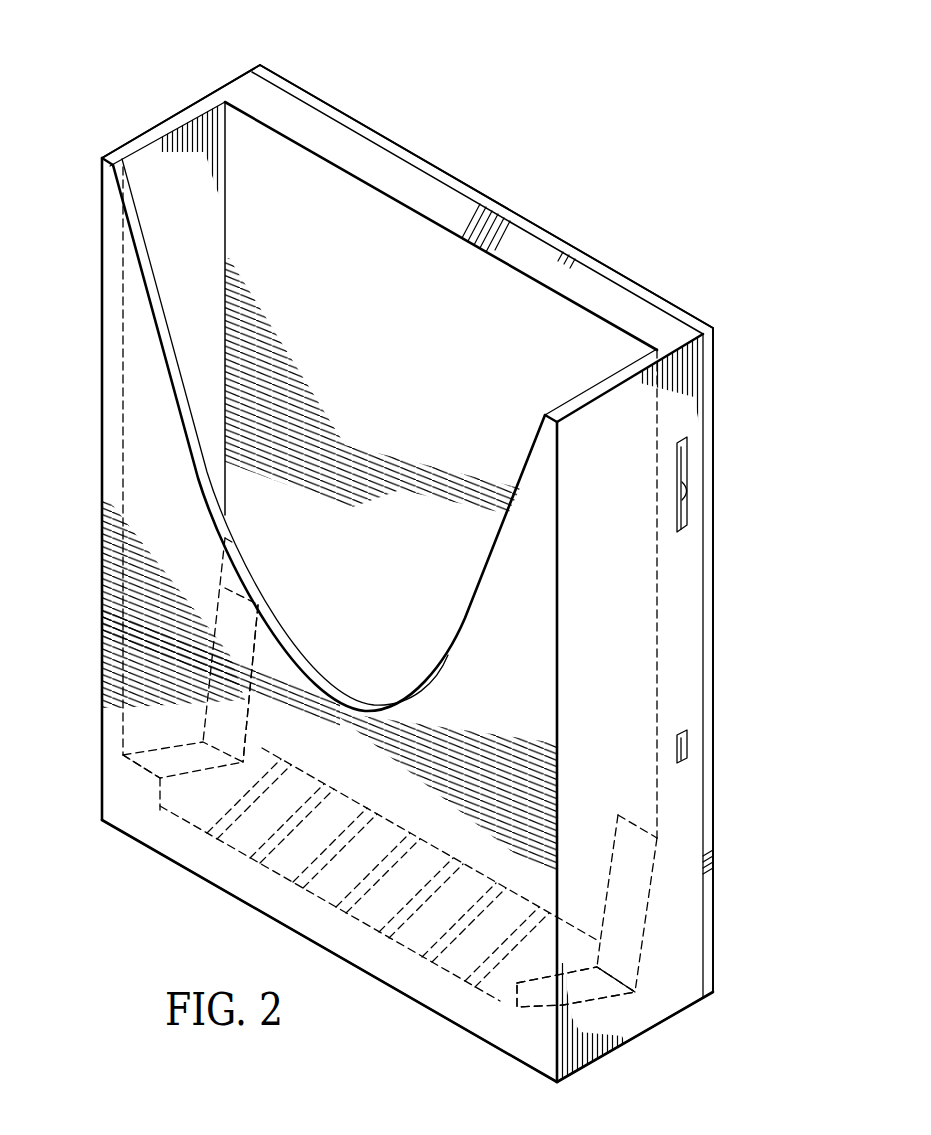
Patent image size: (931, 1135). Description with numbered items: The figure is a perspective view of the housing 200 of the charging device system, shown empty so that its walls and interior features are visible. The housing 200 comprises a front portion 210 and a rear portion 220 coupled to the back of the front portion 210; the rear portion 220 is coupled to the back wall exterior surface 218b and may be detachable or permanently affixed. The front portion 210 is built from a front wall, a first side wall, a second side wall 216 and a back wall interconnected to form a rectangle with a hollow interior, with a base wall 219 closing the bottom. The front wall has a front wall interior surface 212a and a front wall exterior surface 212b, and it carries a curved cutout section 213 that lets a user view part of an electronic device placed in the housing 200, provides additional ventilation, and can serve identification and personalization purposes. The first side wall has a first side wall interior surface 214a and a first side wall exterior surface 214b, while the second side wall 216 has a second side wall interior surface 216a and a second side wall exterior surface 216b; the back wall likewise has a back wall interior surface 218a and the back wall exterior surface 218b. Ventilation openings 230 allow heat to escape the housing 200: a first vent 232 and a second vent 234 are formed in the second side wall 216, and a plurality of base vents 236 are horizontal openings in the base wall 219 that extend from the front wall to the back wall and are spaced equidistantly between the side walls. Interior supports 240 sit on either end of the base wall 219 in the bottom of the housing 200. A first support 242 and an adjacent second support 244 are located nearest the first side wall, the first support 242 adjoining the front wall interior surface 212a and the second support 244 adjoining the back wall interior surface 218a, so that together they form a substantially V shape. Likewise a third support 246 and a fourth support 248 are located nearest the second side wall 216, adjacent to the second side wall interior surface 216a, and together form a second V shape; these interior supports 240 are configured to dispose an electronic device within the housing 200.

The housing 200 is at (424, 119).
The front portion 210 is at (110, 324).
The front wall interior surface 212a is at (170, 340).
The front wall exterior surface 212b is at (110, 440).
The cutout section 213 is at (242, 577).
The first side wall interior surface 214a is at (143, 160).
The first side wall exterior surface 214b is at (182, 108).
The second side wall 216 is at (700, 668).
The second side wall interior surface 216a is at (627, 367).
The second side wall exterior surface 216b is at (697, 568).
The back wall interior surface 218a is at (447, 253).
The back wall exterior surface 218b is at (310, 97).
The base wall 219 is at (528, 1056).
The rear portion 220 is at (718, 386).
The ventilation openings 230 is at (688, 466).
The first vent 232 is at (688, 502).
The second vent 234 is at (690, 746).
The base vents 236 is at (422, 964).
The interior supports 240 is at (193, 800).
The first support 242 is at (155, 778).
The second support 244 is at (278, 640).
The third support 246 is at (600, 990).
The fourth support 248 is at (633, 908).